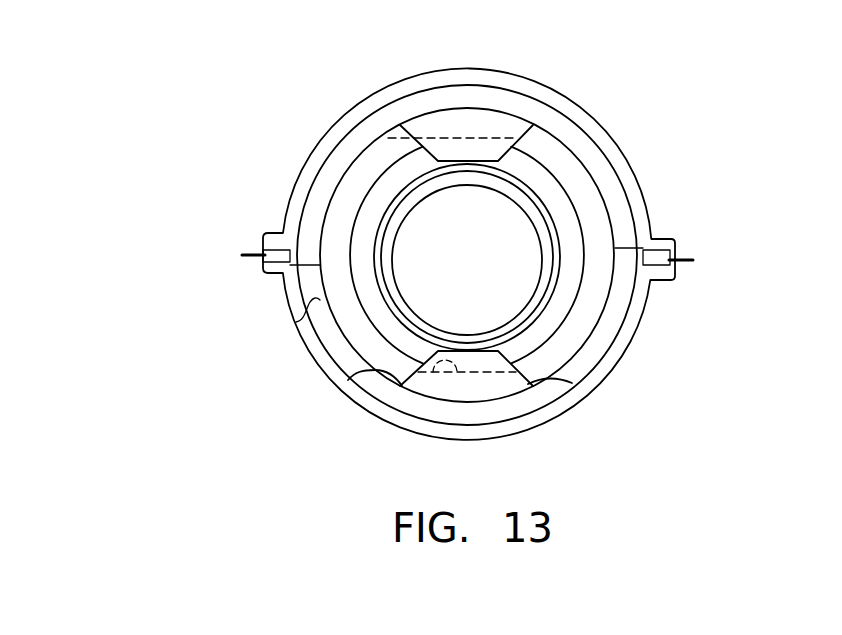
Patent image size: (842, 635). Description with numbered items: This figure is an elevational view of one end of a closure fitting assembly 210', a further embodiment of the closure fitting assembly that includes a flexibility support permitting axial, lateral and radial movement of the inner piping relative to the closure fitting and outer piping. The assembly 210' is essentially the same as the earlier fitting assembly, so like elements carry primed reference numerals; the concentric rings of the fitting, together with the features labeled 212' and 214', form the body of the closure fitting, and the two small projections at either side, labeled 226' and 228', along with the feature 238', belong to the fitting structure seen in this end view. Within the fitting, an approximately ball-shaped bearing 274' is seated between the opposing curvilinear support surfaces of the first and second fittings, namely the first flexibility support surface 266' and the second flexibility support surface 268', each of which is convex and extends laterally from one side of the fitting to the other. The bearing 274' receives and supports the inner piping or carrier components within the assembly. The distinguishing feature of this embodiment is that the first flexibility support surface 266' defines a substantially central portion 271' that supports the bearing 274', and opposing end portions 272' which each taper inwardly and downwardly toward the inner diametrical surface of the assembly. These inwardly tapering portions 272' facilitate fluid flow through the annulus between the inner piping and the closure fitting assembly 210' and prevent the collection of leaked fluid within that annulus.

The fitting assembly 210' is at (469, 243).
The outer housing 212' is at (510, 255).
The housing flange 214' is at (467, 231).
The right mounting lug with pin 226' is at (664, 236).
The left mounting lug with pin 228' is at (270, 233).
The retaining tab 238' is at (272, 316).
The first flexibility support surface 266' is at (458, 420).
The second flexibility support surface 268' is at (422, 111).
The central portion 271' is at (467, 257).
The end portions 272' is at (466, 386).
The bearing 274' is at (411, 248).